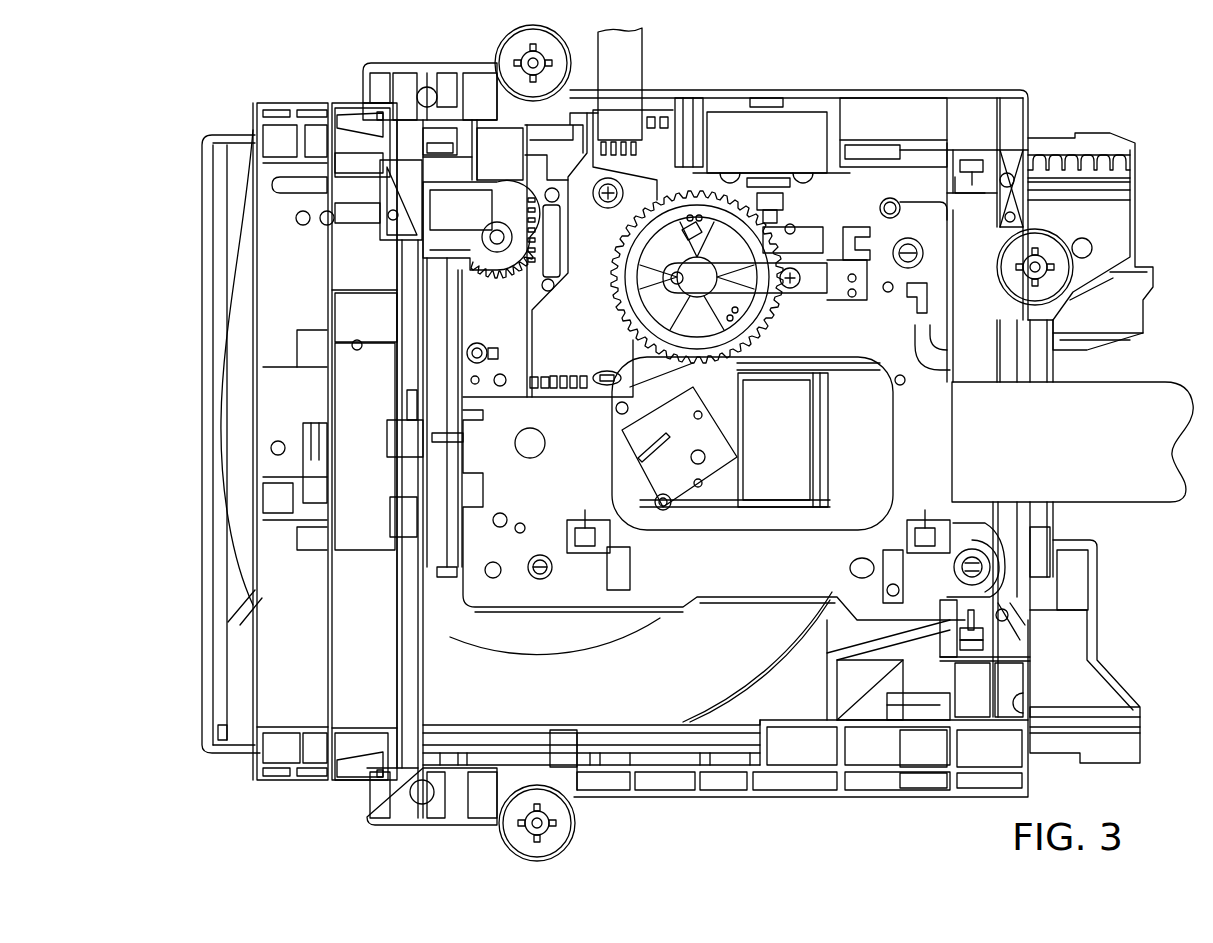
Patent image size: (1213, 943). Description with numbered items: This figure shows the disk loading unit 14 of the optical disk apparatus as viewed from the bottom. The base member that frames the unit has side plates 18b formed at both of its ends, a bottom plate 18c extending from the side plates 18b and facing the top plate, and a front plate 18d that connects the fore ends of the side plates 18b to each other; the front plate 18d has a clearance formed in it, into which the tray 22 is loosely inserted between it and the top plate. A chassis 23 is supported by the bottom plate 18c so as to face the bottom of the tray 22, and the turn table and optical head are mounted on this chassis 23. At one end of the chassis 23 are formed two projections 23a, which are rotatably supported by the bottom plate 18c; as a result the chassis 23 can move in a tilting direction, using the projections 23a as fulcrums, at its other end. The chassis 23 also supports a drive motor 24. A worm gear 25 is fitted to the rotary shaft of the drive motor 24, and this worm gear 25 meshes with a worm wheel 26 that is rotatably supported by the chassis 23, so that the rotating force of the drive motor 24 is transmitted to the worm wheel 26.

The disk loading unit 14 is at (245, 86).
The side plate 18b is at (670, 775).
The bottom plate 18c is at (288, 715).
The front plate 18d is at (418, 693).
The tray 22 is at (218, 760).
The chassis 23 is at (937, 433).
The projection 23a is at (972, 165).
The drive motor 24 is at (770, 128).
The worm gear 25 is at (668, 255).
The worm wheel 26 is at (688, 200).